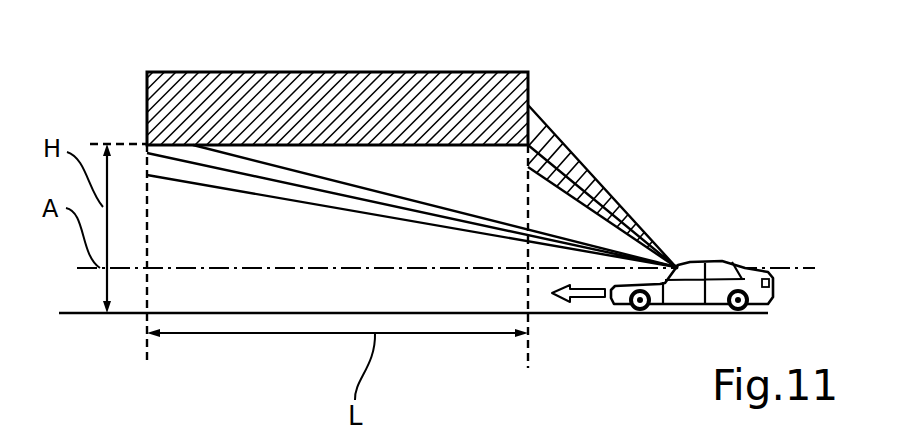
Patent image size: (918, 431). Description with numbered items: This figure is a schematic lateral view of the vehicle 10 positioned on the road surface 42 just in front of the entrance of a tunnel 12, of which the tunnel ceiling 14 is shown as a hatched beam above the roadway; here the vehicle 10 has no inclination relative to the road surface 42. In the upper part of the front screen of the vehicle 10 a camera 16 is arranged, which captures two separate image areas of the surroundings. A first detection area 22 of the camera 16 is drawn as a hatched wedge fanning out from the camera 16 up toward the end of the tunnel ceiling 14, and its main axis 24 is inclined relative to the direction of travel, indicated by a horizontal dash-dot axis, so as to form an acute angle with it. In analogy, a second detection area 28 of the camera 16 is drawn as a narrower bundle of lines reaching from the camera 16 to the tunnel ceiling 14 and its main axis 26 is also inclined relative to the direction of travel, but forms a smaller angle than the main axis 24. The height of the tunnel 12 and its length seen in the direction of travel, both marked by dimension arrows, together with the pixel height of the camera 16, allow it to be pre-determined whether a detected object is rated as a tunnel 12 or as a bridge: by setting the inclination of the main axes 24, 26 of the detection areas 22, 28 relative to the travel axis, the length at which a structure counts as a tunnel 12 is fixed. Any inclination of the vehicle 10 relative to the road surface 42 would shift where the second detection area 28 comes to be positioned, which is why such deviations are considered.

The vehicle 10 is at (748, 247).
The tunnel 12 is at (267, 245).
The tunnel ceiling 14 is at (257, 92).
The camera 16 is at (677, 266).
The detection area 22 is at (545, 140).
The main axis 24 is at (590, 175).
The main axis 26 is at (422, 213).
The detection area 28 is at (345, 190).
The road surface 42 is at (568, 313).